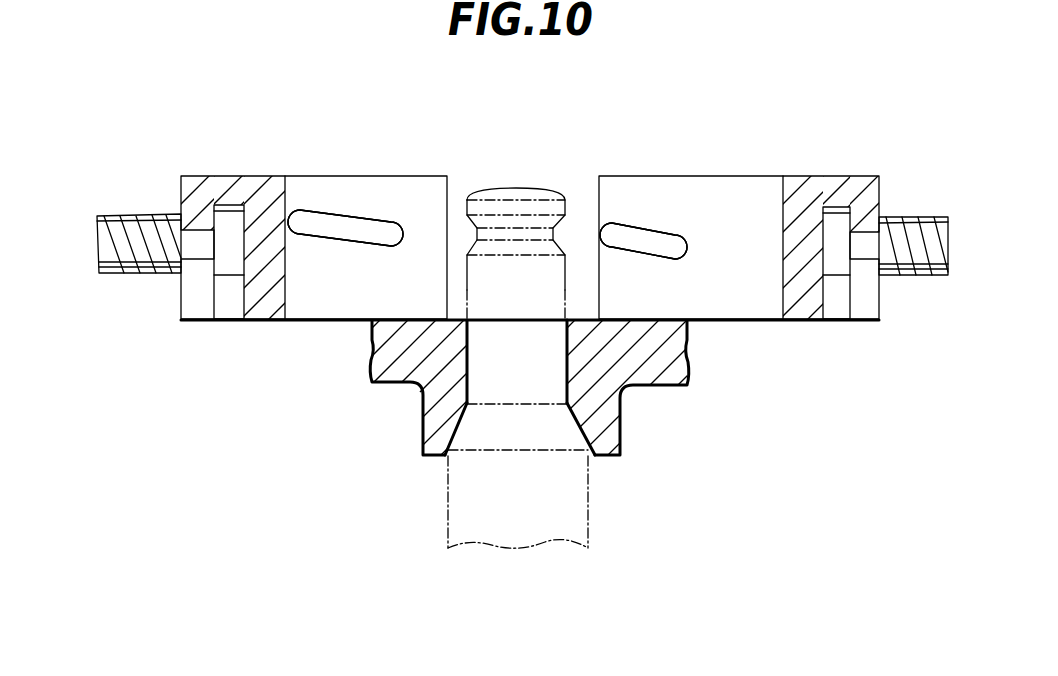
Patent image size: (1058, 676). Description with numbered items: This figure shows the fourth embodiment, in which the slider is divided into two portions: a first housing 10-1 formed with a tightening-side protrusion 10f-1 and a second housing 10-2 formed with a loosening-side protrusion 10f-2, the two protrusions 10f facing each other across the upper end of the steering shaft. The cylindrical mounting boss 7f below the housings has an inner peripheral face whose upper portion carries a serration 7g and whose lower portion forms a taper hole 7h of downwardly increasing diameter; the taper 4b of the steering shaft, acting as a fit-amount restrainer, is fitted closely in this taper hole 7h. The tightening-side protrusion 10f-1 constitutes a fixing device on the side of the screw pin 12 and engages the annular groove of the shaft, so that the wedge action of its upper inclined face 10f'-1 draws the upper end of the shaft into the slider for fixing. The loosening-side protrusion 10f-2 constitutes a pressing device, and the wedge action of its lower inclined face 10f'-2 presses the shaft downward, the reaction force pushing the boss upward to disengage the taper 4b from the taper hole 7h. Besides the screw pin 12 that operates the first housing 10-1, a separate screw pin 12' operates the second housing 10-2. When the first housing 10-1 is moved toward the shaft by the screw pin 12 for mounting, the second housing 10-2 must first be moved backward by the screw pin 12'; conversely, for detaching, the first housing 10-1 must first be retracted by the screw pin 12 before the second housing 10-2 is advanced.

The taper 4b is at (493, 435).
The mounting boss 7f is at (623, 435).
The serration 7g is at (550, 359).
The taper hole 7h is at (462, 422).
The first housing 10-1 is at (270, 322).
The second housing 10-2 is at (802, 322).
The protrusions 10f is at (487, 165).
The tightening-side protrusion 10f-1 is at (387, 222).
The loosening-side protrusion 10f-2 is at (634, 223).
The upper inclined face 10f'-1 is at (334, 181).
The lower inclined face 10f'-2 is at (685, 295).
The screw pin 12 is at (139, 282).
The screw pin 12' is at (913, 212).